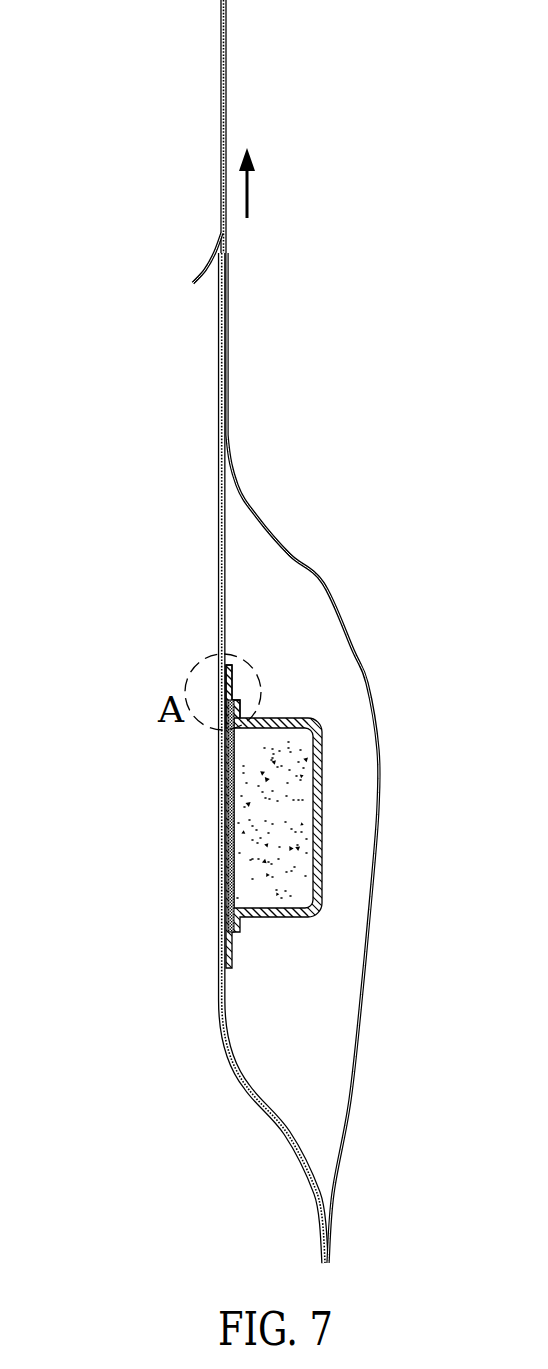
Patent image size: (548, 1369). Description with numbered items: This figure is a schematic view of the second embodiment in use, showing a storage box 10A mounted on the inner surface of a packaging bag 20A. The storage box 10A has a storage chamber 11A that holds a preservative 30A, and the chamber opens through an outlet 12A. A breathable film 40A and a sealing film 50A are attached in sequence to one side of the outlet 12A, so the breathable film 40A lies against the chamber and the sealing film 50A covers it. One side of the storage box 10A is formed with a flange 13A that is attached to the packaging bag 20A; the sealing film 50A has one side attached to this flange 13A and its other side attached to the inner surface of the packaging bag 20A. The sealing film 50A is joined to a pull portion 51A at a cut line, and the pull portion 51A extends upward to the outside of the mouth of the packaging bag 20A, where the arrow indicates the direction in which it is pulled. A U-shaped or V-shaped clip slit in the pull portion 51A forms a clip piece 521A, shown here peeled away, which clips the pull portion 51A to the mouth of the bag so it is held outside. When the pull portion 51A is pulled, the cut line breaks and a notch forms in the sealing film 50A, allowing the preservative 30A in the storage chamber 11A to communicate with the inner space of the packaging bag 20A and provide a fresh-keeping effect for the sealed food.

The pull portion 51A is at (221, 101).
The clip piece 521A is at (203, 275).
The sealing film 50A is at (226, 361).
The packaging bag 20A is at (320, 585).
The storage box 10A is at (262, 912).
The storage chamber 11A is at (265, 907).
The outlet 12A is at (231, 753).
The flange 13A is at (230, 670).
The preservative 30A is at (243, 808).
The breathable film 40A is at (233, 777).